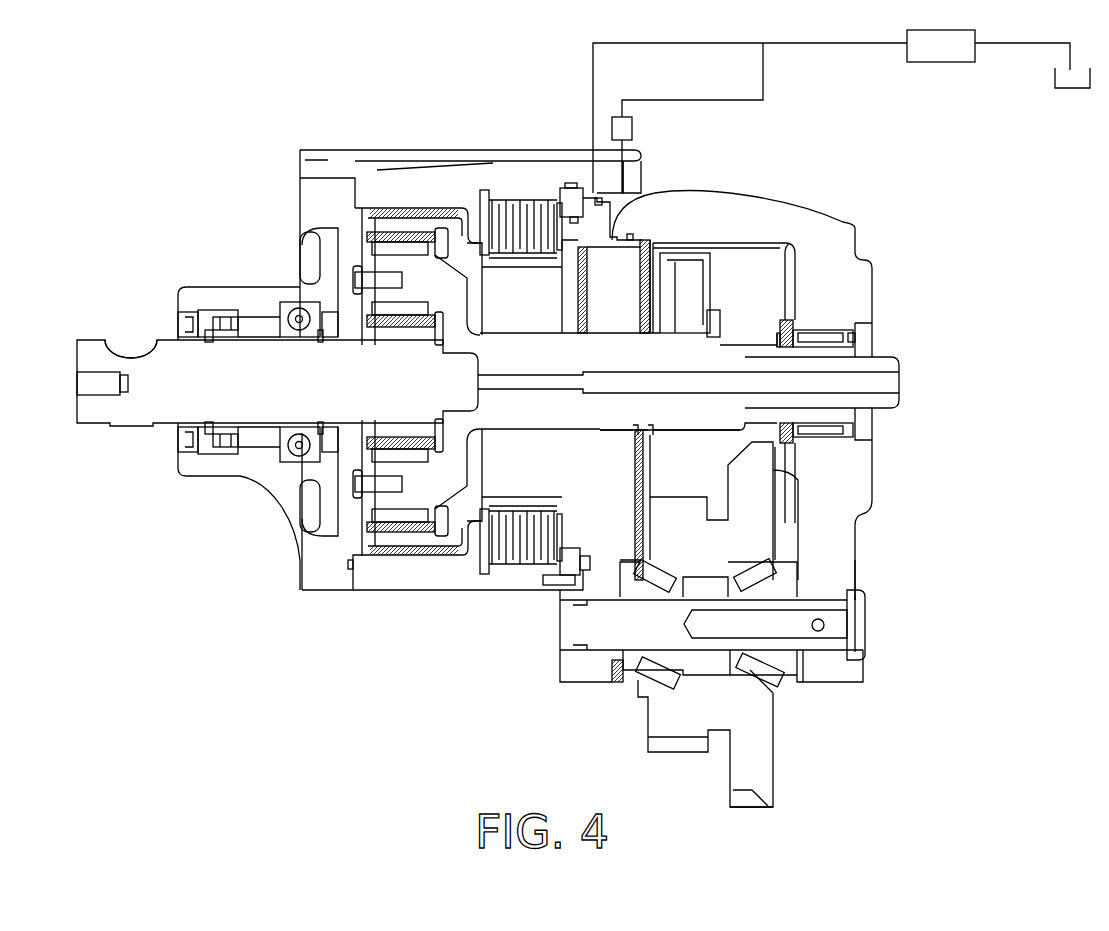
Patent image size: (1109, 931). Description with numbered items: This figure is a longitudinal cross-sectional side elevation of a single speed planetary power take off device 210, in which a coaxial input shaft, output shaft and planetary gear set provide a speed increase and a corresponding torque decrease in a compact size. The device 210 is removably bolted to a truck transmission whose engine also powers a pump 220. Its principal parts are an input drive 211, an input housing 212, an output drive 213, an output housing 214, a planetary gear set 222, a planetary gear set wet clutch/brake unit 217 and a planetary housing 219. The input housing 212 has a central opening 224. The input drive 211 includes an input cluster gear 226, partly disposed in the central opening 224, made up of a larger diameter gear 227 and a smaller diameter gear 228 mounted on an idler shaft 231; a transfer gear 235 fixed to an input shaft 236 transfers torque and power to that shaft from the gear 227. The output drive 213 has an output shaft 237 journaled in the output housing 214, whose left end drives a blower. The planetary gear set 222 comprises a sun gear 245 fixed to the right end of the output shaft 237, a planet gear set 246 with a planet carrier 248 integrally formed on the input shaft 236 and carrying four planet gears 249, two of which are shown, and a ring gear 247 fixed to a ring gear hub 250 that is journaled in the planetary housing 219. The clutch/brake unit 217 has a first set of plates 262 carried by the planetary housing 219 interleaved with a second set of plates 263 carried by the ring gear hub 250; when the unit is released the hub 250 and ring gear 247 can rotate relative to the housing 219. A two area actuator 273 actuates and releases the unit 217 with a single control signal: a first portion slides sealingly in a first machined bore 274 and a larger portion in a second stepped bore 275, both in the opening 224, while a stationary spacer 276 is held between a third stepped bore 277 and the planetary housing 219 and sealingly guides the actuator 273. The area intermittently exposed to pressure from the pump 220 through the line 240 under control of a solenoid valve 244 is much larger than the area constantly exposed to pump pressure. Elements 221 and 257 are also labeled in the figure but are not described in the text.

The power take off device 210 is at (262, 128).
The input drive 211 is at (720, 325).
The input housing 212 is at (858, 283).
The output drive 213 is at (92, 338).
The output housing 214 is at (205, 300).
The planetary gear set wet clutch/brake unit 217 is at (510, 203).
The planetary housing 219 is at (413, 190).
The pump 220 is at (947, 63).
The cover 221 is at (663, 178).
The planetary gear set 222 is at (363, 512).
The central opening 224 is at (735, 244).
The input cluster gear 226 is at (767, 757).
The larger diameter gear 227 is at (678, 753).
The smaller diameter gear 228 is at (747, 807).
The idler shaft 231 is at (575, 630).
The transfer gear 235 is at (702, 301).
The input shaft 236 is at (707, 422).
The output shaft 237 is at (162, 402).
The line 240 is at (817, 47).
The solenoid valve 244 is at (614, 116).
The sun gear 245 is at (395, 438).
The planet gear set 246 is at (347, 252).
The ring gear 247 is at (402, 557).
The planet carrier 248 is at (423, 280).
The planet gears 249 is at (447, 477).
The ring gear hub 250 is at (473, 557).
The plate 257 is at (378, 212).
The first set of plates 262 is at (547, 203).
The second set of plates 263 is at (557, 187).
The two area actuator 273 is at (603, 253).
The first machined bore 274 is at (667, 193).
The second larger diameter stepped machined bore 275 is at (595, 560).
The stationary spacer 276 is at (557, 590).
The third larger diameter stepped machined bore 277 is at (573, 190).